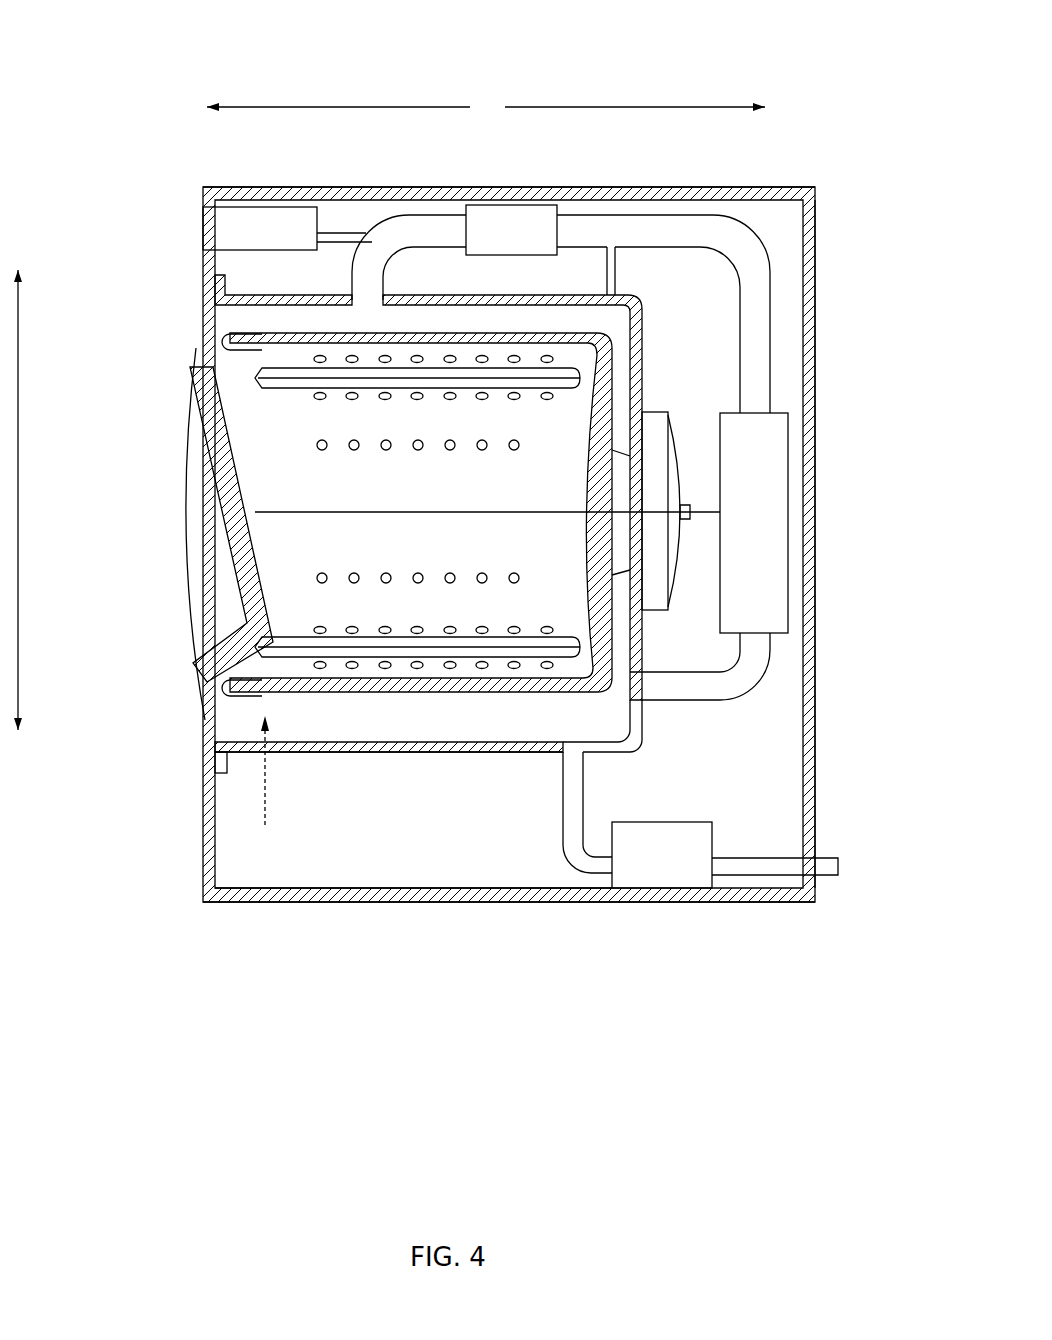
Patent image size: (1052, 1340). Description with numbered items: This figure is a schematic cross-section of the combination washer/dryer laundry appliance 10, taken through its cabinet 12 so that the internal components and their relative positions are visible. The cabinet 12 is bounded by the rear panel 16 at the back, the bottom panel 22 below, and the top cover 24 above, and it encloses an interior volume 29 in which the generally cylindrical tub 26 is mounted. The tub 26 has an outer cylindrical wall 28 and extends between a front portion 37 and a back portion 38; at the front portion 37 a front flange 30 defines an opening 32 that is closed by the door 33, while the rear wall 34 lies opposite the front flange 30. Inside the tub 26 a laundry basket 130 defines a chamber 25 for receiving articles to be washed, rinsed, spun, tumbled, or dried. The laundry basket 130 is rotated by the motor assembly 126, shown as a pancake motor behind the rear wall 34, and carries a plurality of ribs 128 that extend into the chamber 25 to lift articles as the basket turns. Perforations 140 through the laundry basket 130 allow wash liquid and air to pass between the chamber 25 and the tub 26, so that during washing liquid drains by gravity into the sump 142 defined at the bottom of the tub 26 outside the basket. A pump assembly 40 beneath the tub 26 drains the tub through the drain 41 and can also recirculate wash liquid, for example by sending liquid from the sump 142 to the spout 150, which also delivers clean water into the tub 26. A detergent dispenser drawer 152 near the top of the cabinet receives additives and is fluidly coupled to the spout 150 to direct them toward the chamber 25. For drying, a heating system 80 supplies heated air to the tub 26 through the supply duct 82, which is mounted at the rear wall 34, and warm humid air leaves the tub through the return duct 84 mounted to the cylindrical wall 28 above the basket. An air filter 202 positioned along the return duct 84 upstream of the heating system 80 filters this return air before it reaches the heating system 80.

The laundry appliance 10 is at (211, 80).
The cabinet 12 is at (817, 535).
The rear panel 16 is at (816, 307).
The bottom panel 22 is at (460, 901).
The top cover 24 is at (506, 189).
The chamber 25 is at (293, 483).
The tub 26 is at (430, 775).
The outer cylindrical wall 28 is at (455, 748).
The interior volume 29 is at (330, 815).
The front flange 30 is at (227, 770).
The opening 32 is at (228, 340).
The door 33 is at (205, 580).
The rear wall 34 is at (630, 326).
The front portion 37 is at (225, 695).
The back portion 38 is at (620, 704).
The pump assembly 40 is at (682, 847).
The drain 41 is at (563, 800).
The heating system 80 is at (766, 510).
The supply duct 82 is at (750, 664).
The return duct 84 is at (757, 290).
The motor assembly 126 is at (660, 447).
The ribs 128 is at (370, 506).
The laundry basket 130 is at (380, 335).
The perforations 140 is at (488, 453).
The sump 142 is at (270, 788).
The spout 150 is at (352, 232).
The detergent dispenser drawer 152 is at (268, 222).
The air filter 202 is at (530, 236).